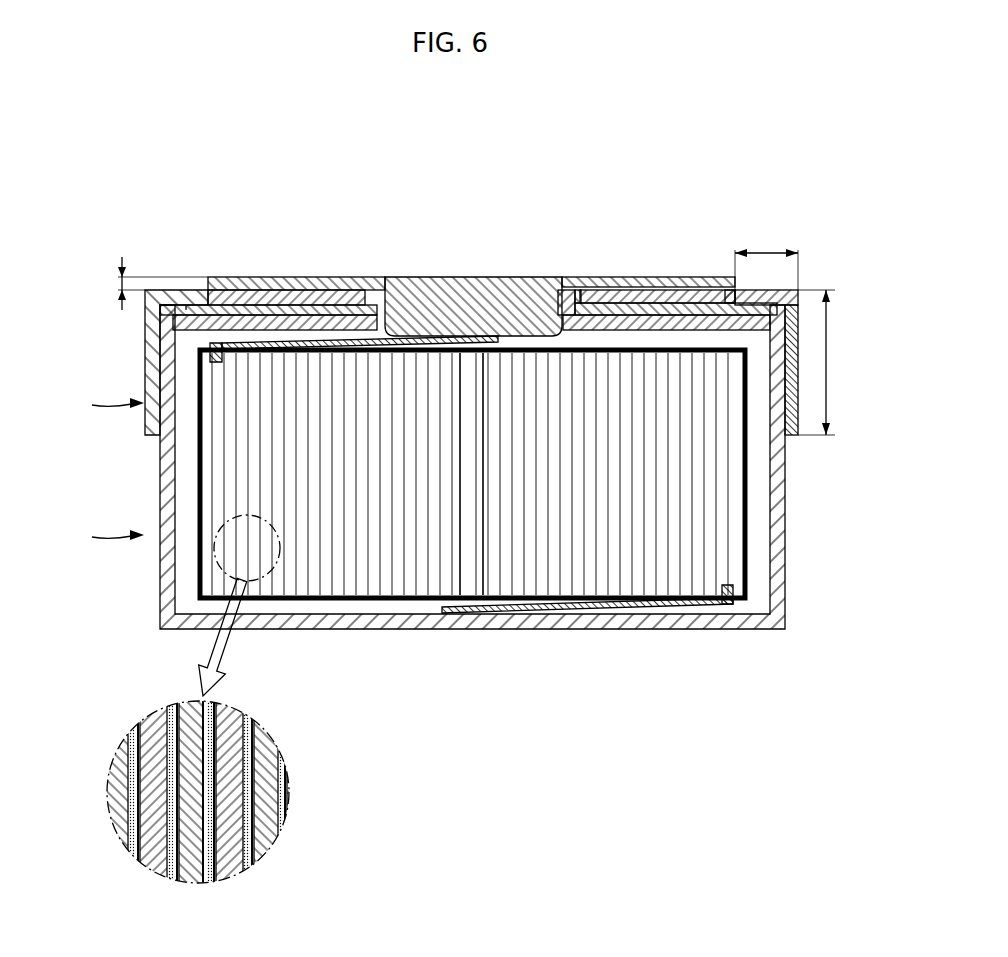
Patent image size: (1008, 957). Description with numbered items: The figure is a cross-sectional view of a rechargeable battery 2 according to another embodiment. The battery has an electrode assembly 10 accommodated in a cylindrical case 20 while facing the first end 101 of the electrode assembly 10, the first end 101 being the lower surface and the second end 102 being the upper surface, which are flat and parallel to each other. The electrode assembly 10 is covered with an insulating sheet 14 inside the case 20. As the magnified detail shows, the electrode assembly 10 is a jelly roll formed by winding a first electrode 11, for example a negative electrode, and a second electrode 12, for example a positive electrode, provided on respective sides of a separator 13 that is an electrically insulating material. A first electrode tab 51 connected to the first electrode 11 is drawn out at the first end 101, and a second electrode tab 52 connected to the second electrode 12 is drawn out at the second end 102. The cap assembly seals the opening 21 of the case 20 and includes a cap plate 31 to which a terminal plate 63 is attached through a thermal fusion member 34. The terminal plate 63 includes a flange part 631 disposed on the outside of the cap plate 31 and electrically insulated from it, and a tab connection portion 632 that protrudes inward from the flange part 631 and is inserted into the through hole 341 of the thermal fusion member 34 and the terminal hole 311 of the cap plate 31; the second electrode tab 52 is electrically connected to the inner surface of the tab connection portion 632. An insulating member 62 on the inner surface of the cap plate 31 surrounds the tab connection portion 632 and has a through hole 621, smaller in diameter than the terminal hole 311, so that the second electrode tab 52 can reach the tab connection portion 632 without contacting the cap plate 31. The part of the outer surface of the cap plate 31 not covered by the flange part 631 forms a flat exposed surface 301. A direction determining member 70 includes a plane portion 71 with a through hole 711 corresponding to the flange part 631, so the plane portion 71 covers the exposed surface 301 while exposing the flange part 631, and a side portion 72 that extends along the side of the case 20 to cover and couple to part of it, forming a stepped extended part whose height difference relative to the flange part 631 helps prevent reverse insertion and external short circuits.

The rechargeable battery 2 is at (469, 140).
The electrode assembly 10 is at (338, 556).
The first electrode 11 is at (192, 880).
The second electrode 12 is at (228, 880).
The separator 13 is at (206, 792).
The insulating sheet 14 is at (748, 524).
The case 20 is at (150, 486).
The opening 21 is at (167, 306).
The cap plate 31 is at (288, 309).
The thermal fusion member 34 is at (260, 297).
The first electrode tab 51 is at (630, 608).
The second electrode tab 52 is at (317, 337).
The insulating member 62 is at (227, 323).
The terminal plate 63 is at (385, 262).
The direction determining member 70 is at (136, 354).
The plane portion 71 is at (778, 290).
The side portion 72 is at (796, 396).
The first end 101 is at (400, 615).
The second end 102 is at (634, 330).
The exposed surface 301 is at (188, 290).
The terminal hole 311 is at (577, 296).
The through hole 341 is at (582, 283).
The through hole 621 is at (565, 306).
The flange part 631 is at (354, 280).
The tab connection portion 632 is at (440, 280).
The through hole 711 is at (732, 298).